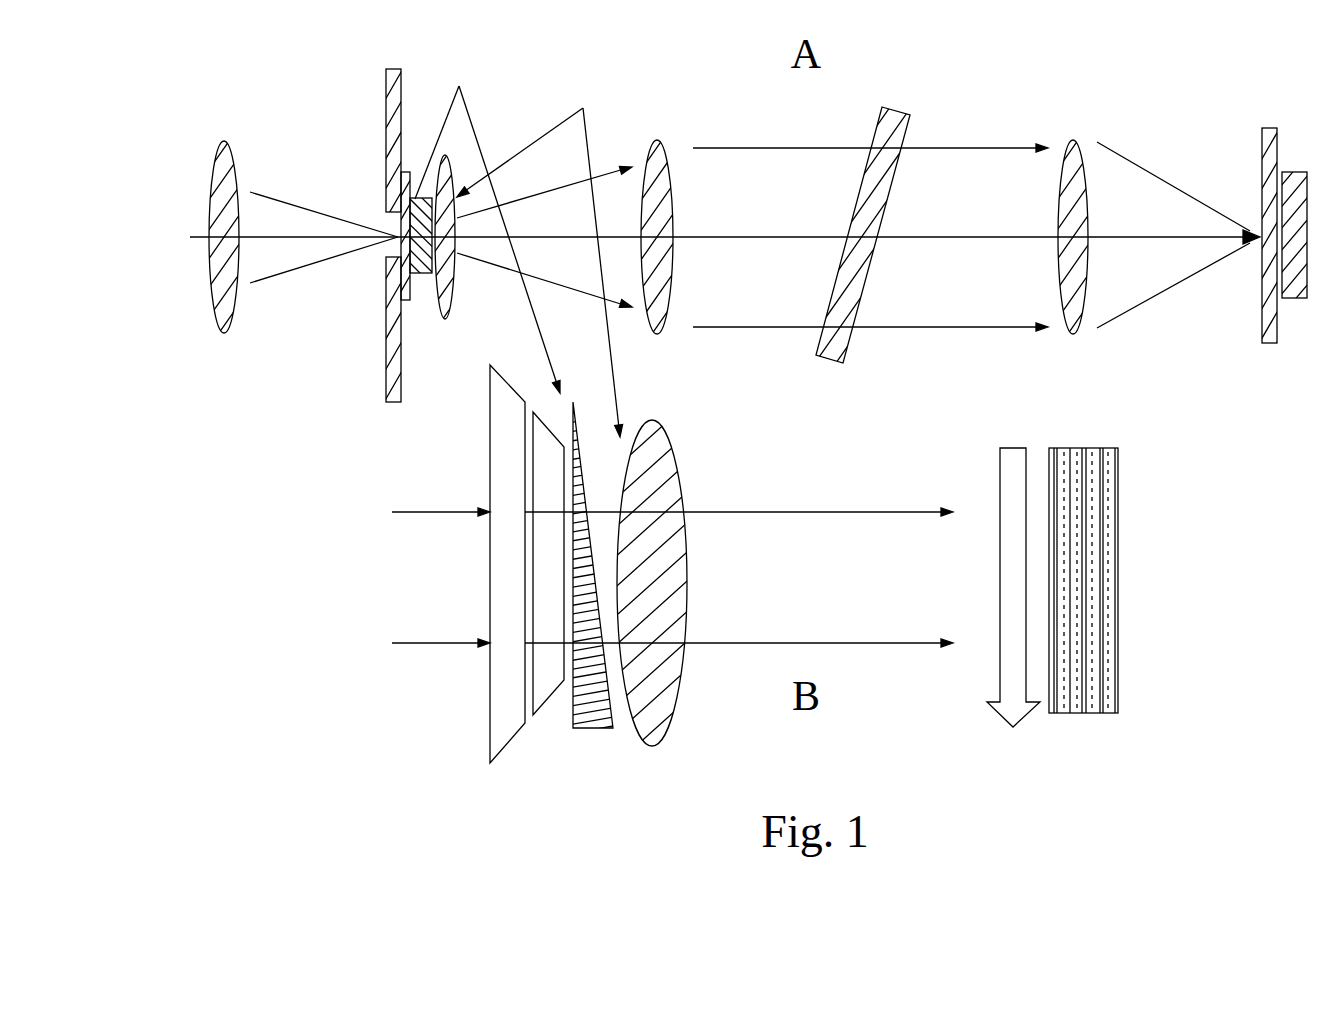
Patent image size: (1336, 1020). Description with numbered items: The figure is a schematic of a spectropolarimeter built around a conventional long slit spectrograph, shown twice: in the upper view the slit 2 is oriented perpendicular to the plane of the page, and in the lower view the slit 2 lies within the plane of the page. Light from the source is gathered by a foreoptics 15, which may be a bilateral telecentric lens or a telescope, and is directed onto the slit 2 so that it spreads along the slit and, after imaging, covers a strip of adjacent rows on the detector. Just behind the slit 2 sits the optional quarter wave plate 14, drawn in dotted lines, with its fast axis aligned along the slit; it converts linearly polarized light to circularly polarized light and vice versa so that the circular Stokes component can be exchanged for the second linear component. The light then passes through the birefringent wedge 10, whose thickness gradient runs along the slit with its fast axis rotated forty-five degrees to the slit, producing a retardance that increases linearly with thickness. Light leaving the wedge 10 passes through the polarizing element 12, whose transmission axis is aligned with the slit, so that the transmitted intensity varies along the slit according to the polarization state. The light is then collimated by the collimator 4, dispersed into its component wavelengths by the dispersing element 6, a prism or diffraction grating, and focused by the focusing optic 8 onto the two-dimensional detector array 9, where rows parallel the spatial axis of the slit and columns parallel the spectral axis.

The slit 2 is at (397, 69).
The collimator 4 is at (661, 140).
The dispersing element 6 is at (908, 132).
The focusing optic 8 is at (1076, 140).
The detector array 9 is at (1277, 140).
The birefringent wedge 10 is at (461, 86).
The polarizing element 12 is at (563, 120).
The quarter wave plate 14 is at (406, 302).
The foreoptics 15 is at (229, 140).